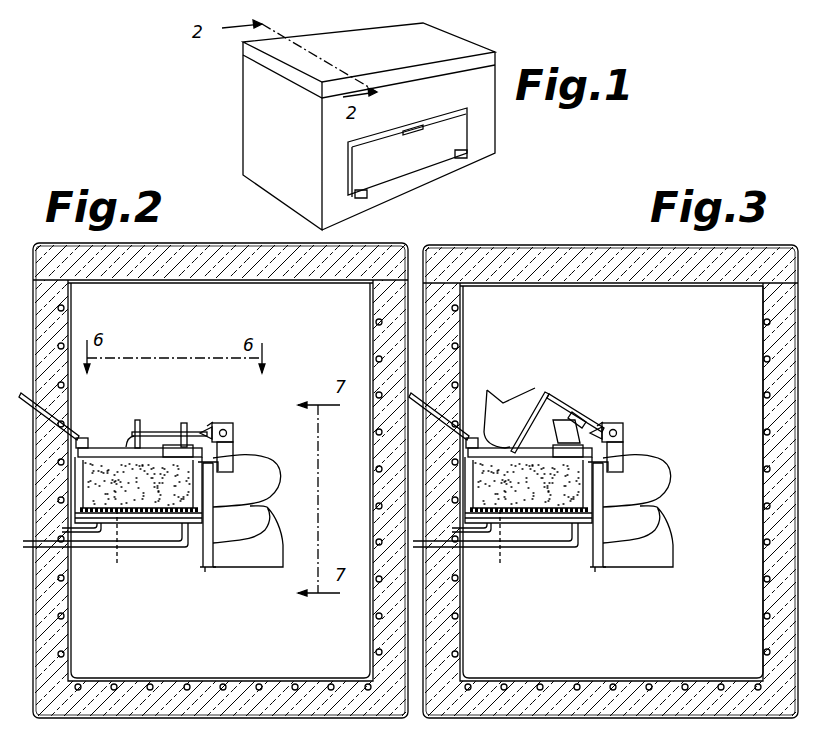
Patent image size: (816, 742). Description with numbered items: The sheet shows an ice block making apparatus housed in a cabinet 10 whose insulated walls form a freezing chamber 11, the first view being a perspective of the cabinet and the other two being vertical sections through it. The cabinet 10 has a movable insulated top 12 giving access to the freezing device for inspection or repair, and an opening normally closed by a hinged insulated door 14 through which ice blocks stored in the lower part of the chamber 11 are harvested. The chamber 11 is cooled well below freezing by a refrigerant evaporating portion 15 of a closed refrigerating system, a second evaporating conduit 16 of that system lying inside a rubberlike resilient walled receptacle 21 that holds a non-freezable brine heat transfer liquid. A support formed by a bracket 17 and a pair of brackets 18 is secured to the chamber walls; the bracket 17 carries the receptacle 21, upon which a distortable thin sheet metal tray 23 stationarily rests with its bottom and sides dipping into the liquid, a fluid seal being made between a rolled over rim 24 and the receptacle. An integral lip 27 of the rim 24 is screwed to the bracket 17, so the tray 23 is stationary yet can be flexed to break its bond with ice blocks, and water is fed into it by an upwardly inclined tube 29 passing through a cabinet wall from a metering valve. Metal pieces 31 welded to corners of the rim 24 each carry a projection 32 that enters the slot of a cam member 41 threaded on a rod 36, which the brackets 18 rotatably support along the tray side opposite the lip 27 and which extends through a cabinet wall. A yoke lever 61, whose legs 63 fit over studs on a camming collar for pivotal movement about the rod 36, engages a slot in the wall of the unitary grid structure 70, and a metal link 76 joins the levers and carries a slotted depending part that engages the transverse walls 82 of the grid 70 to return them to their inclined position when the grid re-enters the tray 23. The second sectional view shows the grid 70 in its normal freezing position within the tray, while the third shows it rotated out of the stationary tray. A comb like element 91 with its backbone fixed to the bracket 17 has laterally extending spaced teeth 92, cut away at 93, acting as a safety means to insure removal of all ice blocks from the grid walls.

In FIG. 1, the cabinet 10 is at (248, 117).
In FIG. 2, the cabinet 10 is at (55, 707).
In FIG. 3, the cabinet 10 is at (738, 710).
In FIG. 2, the freezing chamber 11 is at (235, 297).
In FIG. 3, the freezing chamber 11 is at (488, 297).
In FIG. 1, the movable insulated top 12 is at (468, 45).
In FIG. 2, the movable insulated top 12 is at (182, 247).
In FIG. 3, the movable insulated top 12 is at (543, 249).
In FIG. 1, the insulated door 14 is at (423, 158).
In FIG. 2, the refrigerant evaporating portion 15 is at (373, 357).
In FIG. 3, the refrigerant evaporating portion 15 is at (760, 537).
In FIG. 2, the refrigerant evaporating conduit 16 is at (120, 545).
In FIG. 3, the refrigerant evaporating conduit 16 is at (508, 545).
In FIG. 2, the bracket 17 is at (203, 555).
In FIG. 3, the bracket 17 is at (592, 555).
In FIG. 2, the bracket 18 is at (235, 450).
In FIG. 3, the bracket 18 is at (625, 458).
In FIG. 2, the resilient walled receptacle 21 is at (103, 520).
In FIG. 3, the resilient walled receptacle 21 is at (522, 515).
In FIG. 2, the tray 23 is at (111, 547).
In FIG. 3, the tray 23 is at (493, 544).
In FIG. 2, the rolled over rim 24 is at (112, 447).
In FIG. 3, the rolled over rim 24 is at (503, 447).
In FIG. 2, the integral lip 27 is at (84, 450).
In FIG. 3, the integral lip 27 is at (483, 440).
In FIG. 2, the upwardly inclined tube 29 is at (80, 420).
In FIG. 3, the upwardly inclined tube 29 is at (458, 434).
In FIG. 2, the metal pieces 31 is at (178, 444).
In FIG. 3, the metal pieces 31 is at (560, 445).
In FIG. 2, the projection 32 is at (222, 468).
In FIG. 3, the projection 32 is at (612, 468).
In FIG. 2, the rod 36 is at (233, 433).
In FIG. 3, the rod 36 is at (625, 432).
In FIG. 2, the cam member 41 is at (222, 428).
In FIG. 3, the cam member 41 is at (612, 428).
In FIG. 2, the legs 63 is at (207, 430).
In FIG. 3, the legs 63 is at (603, 428).
In FIG. 2, the yoke lever 61 is at (172, 442).
In FIG. 3, the yoke lever 61 is at (575, 412).
In FIG. 2, the unitary grid structure 70 is at (140, 420).
In FIG. 3, the unitary grid structure 70 is at (533, 391).
In FIG. 2, the metal link 76 is at (195, 432).
In FIG. 3, the metal link 76 is at (590, 423).
In FIG. 2, the transverse walls 82 is at (133, 440).
In FIG. 3, the transverse walls 82 is at (503, 400).
In FIG. 2, the comb like element 91 is at (215, 567).
In FIG. 3, the comb like element 91 is at (603, 567).
In FIG. 2, the teeth 92 is at (272, 462).
In FIG. 3, the teeth 92 is at (665, 465).
In FIG. 2, the cut away 93 is at (265, 508).
In FIG. 3, the cut away 93 is at (660, 505).